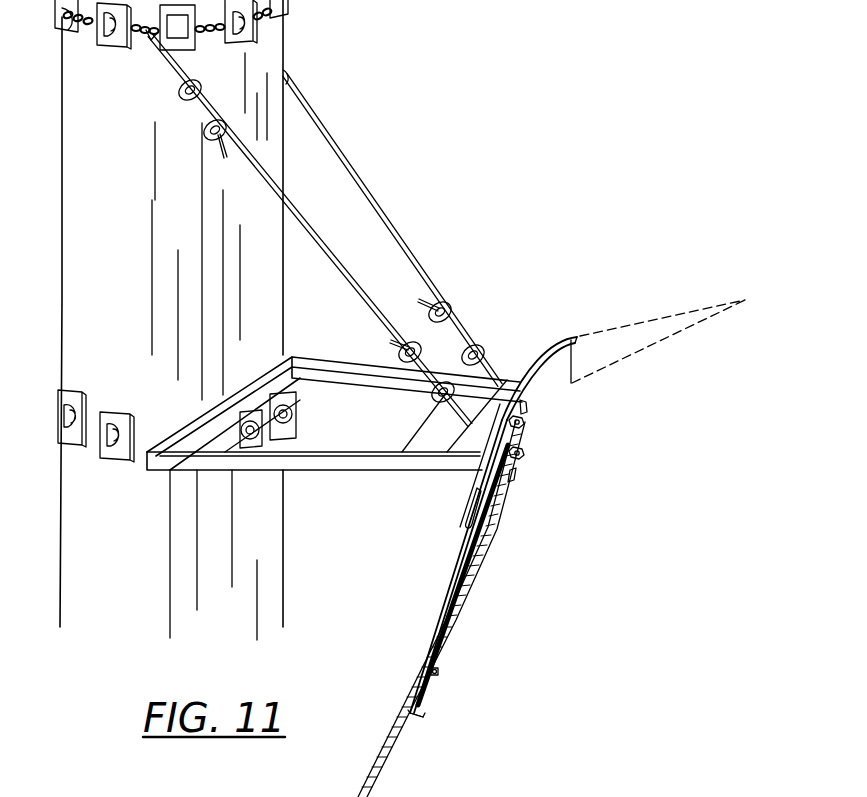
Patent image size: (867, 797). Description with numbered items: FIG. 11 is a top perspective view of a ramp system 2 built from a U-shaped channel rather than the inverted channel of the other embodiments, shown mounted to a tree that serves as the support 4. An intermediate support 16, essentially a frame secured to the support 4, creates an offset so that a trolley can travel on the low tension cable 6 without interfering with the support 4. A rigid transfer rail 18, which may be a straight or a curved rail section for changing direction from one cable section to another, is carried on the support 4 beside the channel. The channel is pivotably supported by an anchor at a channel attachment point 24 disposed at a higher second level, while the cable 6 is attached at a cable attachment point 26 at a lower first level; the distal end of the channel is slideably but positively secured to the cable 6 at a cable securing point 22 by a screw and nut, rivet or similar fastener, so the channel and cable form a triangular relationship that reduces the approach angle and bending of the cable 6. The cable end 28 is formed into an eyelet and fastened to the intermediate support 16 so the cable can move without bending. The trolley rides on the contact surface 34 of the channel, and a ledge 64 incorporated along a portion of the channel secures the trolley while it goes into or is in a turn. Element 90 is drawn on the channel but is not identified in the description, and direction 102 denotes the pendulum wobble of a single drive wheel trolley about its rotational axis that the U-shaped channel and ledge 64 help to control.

The ramp system 2 is at (436, 600).
The support 4 is at (62, 298).
The cable 6 is at (389, 757).
The intermediate support 16 is at (316, 464).
The transfer rail 18 is at (548, 352).
The cable securing point 22 is at (438, 673).
The channel attachment point 24 is at (531, 423).
The cable attachment point 26 is at (530, 472).
The cable end 28 is at (532, 452).
The contact surface 34 is at (411, 719).
The ledge 64 is at (468, 496).
The rail member 90 is at (462, 600).
The direction 102 is at (528, 405).